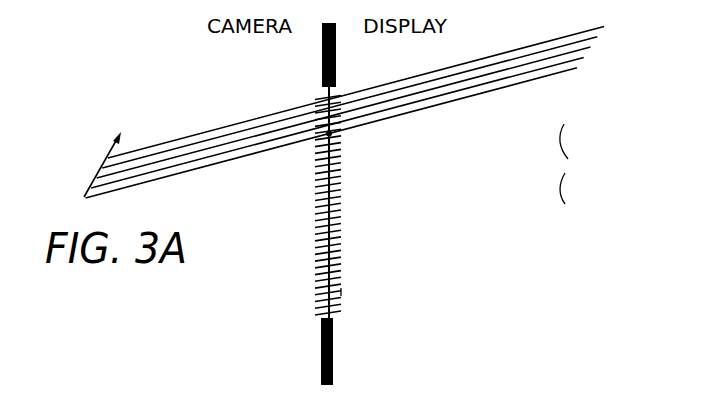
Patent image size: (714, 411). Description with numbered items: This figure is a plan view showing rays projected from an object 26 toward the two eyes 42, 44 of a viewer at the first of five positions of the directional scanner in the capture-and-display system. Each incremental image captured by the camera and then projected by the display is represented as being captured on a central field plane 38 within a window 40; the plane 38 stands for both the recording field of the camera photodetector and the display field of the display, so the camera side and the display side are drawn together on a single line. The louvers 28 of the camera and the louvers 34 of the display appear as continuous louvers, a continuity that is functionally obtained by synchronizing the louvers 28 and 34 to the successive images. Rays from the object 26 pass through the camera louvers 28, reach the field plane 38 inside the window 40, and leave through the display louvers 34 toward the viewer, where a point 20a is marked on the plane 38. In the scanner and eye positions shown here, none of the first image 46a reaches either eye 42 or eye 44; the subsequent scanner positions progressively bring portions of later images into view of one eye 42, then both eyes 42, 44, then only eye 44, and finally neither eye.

The object 26 is at (105, 153).
The louvers of the camera 28 is at (322, 258).
The central field plane 38 is at (327, 213).
The louvers of the display 34 is at (345, 257).
The window 40 is at (353, 294).
The camera pixel point 20a is at (331, 134).
The first image 46a is at (339, 95).
The eye 42 is at (564, 124).
The eye 44 is at (565, 204).